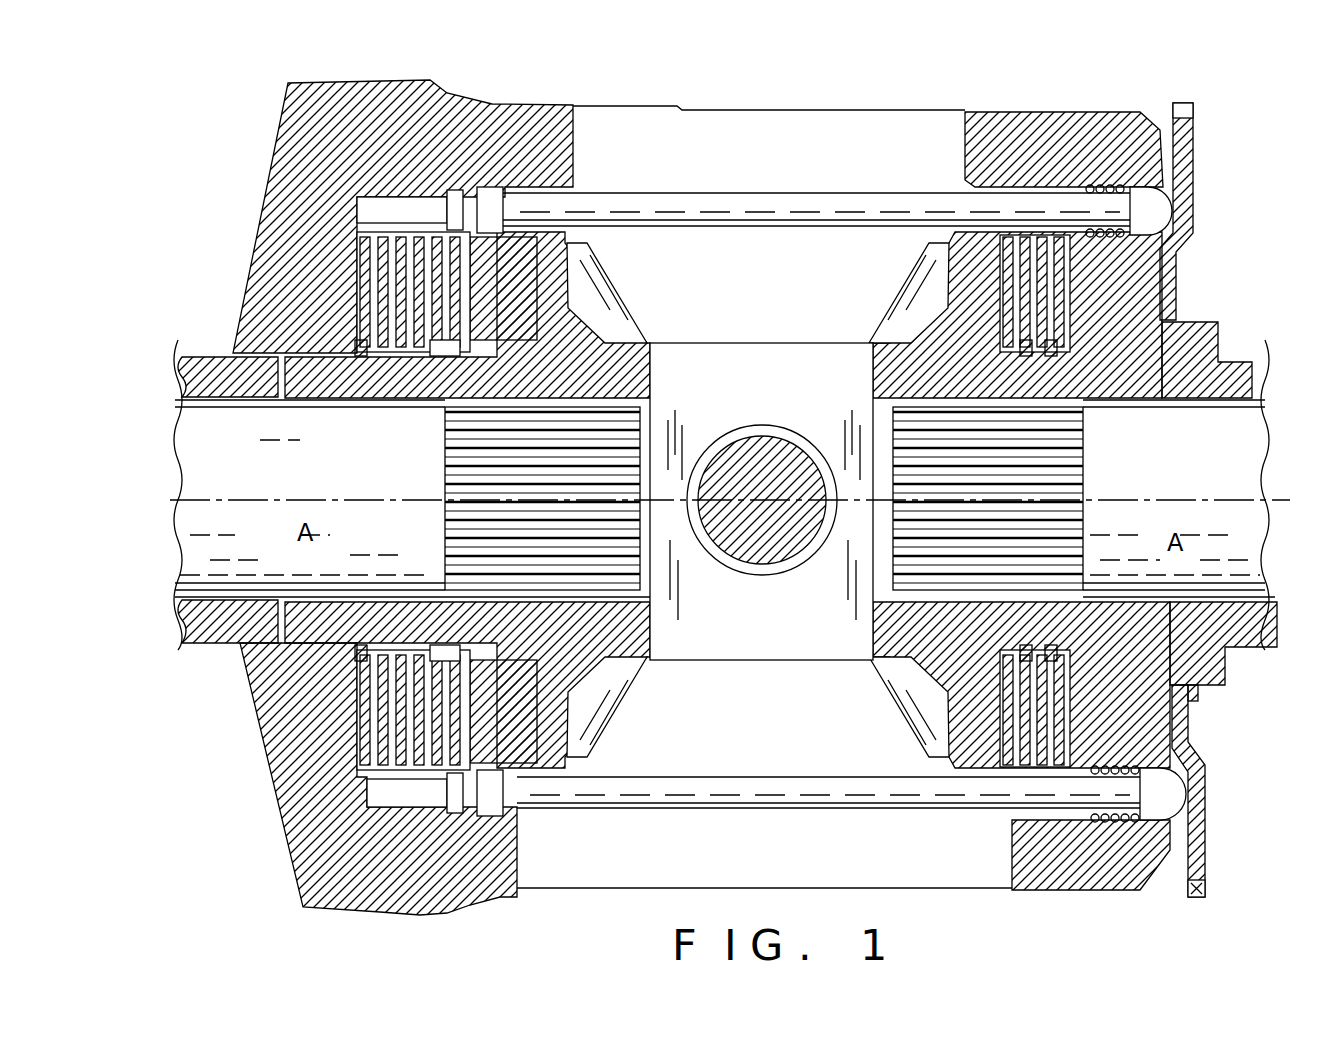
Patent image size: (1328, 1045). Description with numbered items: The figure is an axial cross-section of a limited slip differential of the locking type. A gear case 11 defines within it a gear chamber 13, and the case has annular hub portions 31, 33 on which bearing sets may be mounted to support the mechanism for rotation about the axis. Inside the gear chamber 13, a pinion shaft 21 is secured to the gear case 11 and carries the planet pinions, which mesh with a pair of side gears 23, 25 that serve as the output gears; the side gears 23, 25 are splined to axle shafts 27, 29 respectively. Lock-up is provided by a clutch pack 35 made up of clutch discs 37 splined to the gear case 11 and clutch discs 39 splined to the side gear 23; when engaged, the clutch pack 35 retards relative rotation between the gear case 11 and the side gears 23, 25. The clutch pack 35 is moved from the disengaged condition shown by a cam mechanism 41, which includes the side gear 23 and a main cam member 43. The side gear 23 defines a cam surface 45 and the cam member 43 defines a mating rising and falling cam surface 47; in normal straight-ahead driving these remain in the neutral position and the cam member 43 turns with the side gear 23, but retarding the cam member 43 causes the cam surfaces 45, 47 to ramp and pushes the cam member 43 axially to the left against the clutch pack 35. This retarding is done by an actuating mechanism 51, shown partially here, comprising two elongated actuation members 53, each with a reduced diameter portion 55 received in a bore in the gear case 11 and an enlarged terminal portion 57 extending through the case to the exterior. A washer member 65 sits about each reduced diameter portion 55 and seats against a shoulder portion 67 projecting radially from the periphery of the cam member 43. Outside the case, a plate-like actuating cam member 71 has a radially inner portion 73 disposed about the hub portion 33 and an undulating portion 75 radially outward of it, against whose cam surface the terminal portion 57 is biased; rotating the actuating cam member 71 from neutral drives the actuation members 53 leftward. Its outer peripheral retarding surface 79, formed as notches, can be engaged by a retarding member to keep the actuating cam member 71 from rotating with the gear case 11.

The gear case 11 is at (290, 190).
The gear chamber 13 is at (761, 541).
The pinion shaft 21 is at (762, 500).
The side gear 23 is at (660, 393).
The side gear 25 is at (875, 393).
The axle shaft 27 is at (175, 500).
The axle shaft 29 is at (1235, 500).
The annular hub portion 31 is at (205, 355).
The annular hub portion 33 is at (1240, 365).
The clutch pack 35 is at (355, 740).
The clutch discs 37 is at (365, 262).
The clutch discs 39 is at (400, 348).
The cam mechanism 41 is at (590, 285).
The main cam member 43 is at (510, 330).
The cam surface 45 is at (485, 655).
The cam surface 47 is at (555, 700).
The actuating mechanism 51 is at (1205, 150).
The actuation member 53 is at (830, 215).
The reduced diameter portion 55 is at (440, 200).
The terminal portion 57 is at (1135, 240).
The washer member 65 is at (505, 195).
The shoulder portion 67 is at (470, 205).
The actuating cam member 71 is at (1200, 268).
The radially inner portion 73 is at (1195, 722).
The undulating portion 75 is at (1195, 210).
The retarding surface 79 is at (1183, 105).